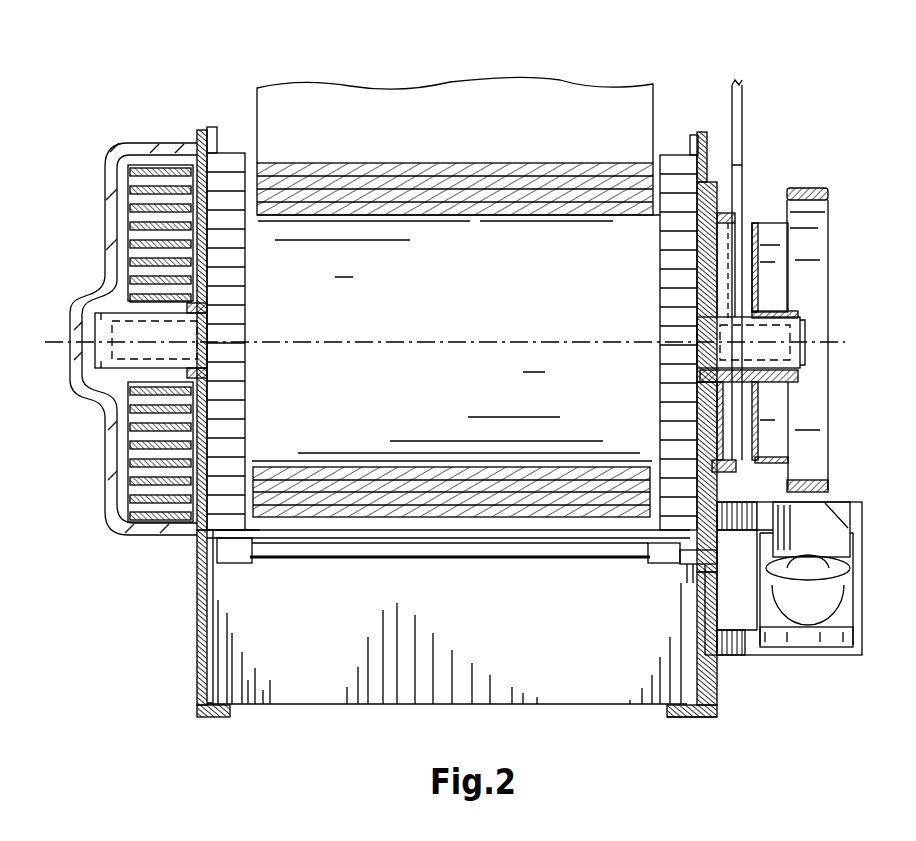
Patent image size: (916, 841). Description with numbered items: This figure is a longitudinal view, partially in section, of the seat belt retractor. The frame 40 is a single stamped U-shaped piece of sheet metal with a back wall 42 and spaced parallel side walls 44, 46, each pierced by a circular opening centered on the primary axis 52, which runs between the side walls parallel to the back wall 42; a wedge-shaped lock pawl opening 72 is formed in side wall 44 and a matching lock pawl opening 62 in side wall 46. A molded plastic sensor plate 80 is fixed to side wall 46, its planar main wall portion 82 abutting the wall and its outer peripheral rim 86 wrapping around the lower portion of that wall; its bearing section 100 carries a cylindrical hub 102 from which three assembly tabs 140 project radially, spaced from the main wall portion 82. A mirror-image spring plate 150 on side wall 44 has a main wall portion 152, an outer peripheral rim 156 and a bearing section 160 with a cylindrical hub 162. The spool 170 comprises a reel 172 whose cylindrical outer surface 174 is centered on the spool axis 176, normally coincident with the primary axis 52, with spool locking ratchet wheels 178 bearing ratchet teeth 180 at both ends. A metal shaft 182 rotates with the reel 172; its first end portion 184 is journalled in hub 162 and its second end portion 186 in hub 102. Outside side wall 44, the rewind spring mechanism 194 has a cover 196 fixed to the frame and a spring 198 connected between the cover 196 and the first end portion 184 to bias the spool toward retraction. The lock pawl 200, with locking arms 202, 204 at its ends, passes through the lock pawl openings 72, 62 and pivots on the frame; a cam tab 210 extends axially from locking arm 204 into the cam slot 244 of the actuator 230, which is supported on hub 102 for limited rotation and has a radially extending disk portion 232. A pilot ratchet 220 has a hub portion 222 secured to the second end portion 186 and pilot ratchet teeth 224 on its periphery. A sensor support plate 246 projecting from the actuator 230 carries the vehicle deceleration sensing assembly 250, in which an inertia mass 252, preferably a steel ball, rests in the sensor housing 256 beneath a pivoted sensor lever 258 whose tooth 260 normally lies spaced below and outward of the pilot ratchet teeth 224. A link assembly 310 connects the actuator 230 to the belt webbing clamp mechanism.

The frame 40 is at (222, 609).
The back wall 42 is at (464, 613).
The side wall 44 is at (212, 634).
The side wall 46 is at (683, 677).
The primary axis 52 is at (326, 340).
The lock pawl opening 62 is at (688, 573).
The lock pawl opening 72 is at (215, 578).
The sensor plate 80 is at (716, 712).
The main wall portion 82 is at (703, 668).
The outer peripheral rim 86 is at (688, 718).
The bearing section 100 is at (686, 439).
The cylindrical hub 102 is at (697, 323).
The assembly tabs 140 is at (706, 322).
The spring plate 150 is at (185, 663).
The main wall portion 152 is at (195, 590).
The outer peripheral rim 156 is at (210, 712).
The bearing section 160 is at (222, 406).
The cylindrical hub 162 is at (203, 357).
The spool 170 is at (352, 226).
The reel 172 is at (428, 208).
The cylindrical outer surface 174 is at (548, 214).
The spool axis 176 is at (388, 338).
The spool locking ratchet wheels 178 is at (255, 292).
The ratchet teeth 180 is at (226, 243).
The shaft 182 is at (86, 326).
The first end portion 184 is at (112, 356).
The second end portion 186 is at (705, 355).
The rewind spring mechanism 194 is at (100, 212).
The cover 196 is at (103, 241).
The spring 198 is at (156, 440).
The lock pawl 200 is at (495, 572).
The locking arm 202 is at (243, 551).
The locking arm 204 is at (660, 553).
The cam tab 210 is at (673, 562).
The pilot ratchet 220 is at (835, 214).
The hub portion 222 is at (798, 313).
The pilot ratchet teeth 224 is at (800, 188).
The actuator 230 is at (735, 483).
The disk portion 232 is at (718, 402).
The cam slot 244 is at (713, 568).
The sensor support plate 246 is at (840, 520).
The vehicle deceleration sensing assembly 250 is at (812, 670).
The inertia mass 252 is at (820, 603).
The sensor housing 256 is at (862, 642).
The sensor lever 258 is at (850, 575).
The tooth 260 is at (845, 556).
The link assembly 310 is at (752, 92).